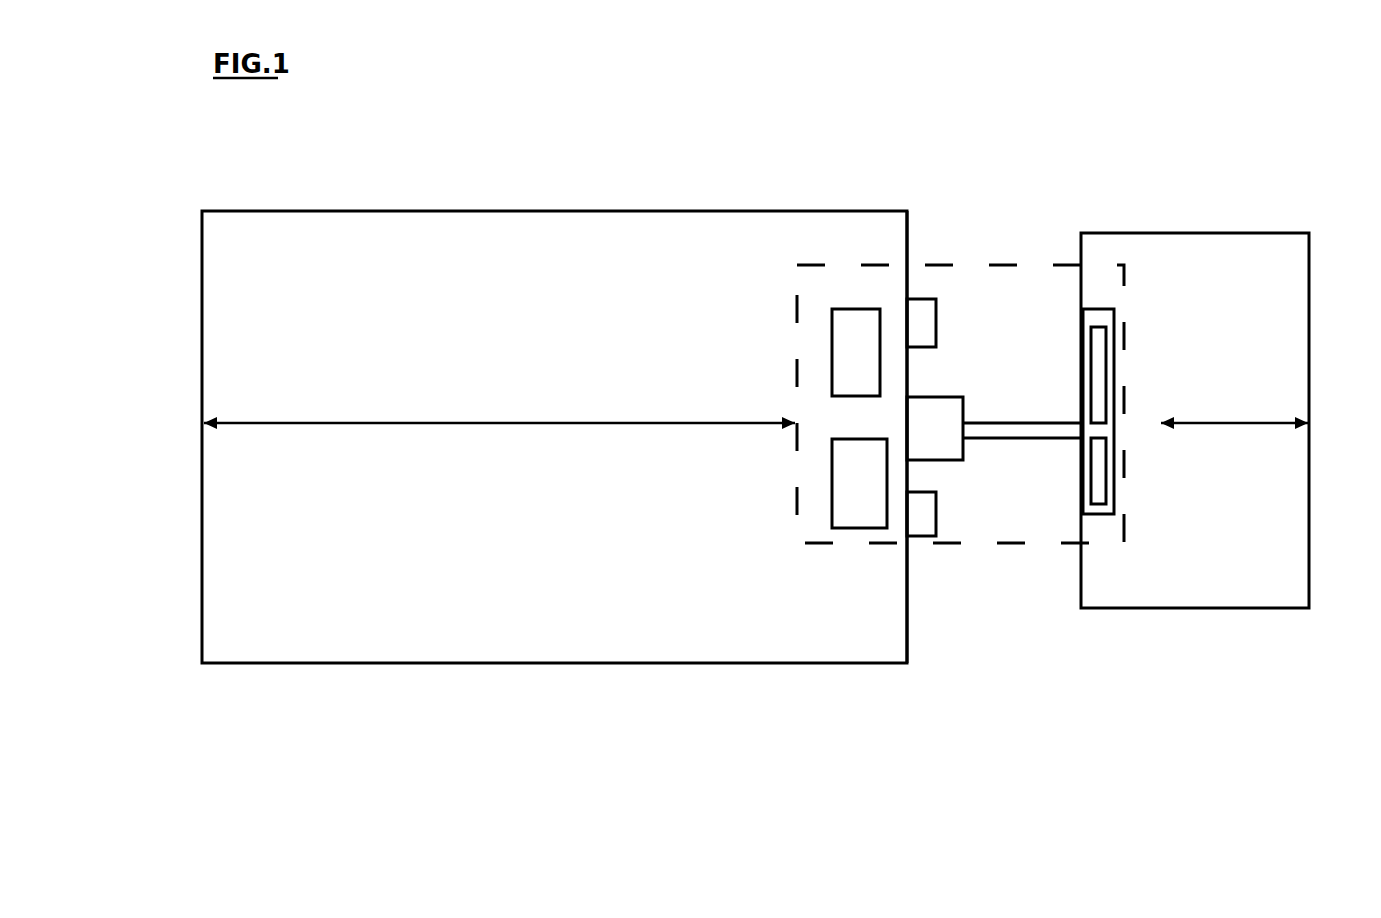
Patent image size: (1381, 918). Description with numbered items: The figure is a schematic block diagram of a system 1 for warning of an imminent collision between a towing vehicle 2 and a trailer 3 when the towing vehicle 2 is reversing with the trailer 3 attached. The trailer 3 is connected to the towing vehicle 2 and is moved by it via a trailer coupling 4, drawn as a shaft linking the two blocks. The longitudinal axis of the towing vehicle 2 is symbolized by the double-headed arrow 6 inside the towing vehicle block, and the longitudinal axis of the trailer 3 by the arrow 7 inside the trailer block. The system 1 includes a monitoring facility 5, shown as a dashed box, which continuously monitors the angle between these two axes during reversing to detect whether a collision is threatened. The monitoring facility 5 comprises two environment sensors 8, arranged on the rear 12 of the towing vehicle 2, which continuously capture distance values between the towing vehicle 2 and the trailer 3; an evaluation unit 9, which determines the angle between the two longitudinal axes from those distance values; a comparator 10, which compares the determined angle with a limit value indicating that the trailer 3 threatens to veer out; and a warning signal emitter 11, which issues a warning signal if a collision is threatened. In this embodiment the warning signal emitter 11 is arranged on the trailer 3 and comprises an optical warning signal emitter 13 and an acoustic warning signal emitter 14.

The system 1 is at (984, 172).
The towing vehicle 2 is at (340, 209).
The trailer 3 is at (1178, 231).
The trailer coupling 4 is at (954, 462).
The monitoring facility 5 is at (814, 261).
The longitudinal axis of the towing vehicle 6 is at (499, 391).
The longitudinal axis of the trailer 7 is at (1234, 398).
The environment sensors 8 is at (923, 297).
The evaluation unit 9 is at (861, 307).
The comparator 10 is at (855, 530).
The warning signal emitter 11 is at (1091, 307).
The rear of the towing vehicle 12 is at (909, 660).
The optical warning signal emitter 13 is at (1107, 372).
The acoustic warning signal emitter 14 is at (1107, 473).